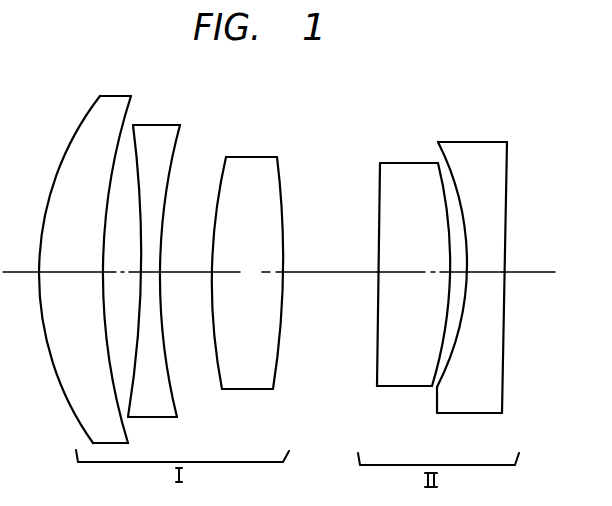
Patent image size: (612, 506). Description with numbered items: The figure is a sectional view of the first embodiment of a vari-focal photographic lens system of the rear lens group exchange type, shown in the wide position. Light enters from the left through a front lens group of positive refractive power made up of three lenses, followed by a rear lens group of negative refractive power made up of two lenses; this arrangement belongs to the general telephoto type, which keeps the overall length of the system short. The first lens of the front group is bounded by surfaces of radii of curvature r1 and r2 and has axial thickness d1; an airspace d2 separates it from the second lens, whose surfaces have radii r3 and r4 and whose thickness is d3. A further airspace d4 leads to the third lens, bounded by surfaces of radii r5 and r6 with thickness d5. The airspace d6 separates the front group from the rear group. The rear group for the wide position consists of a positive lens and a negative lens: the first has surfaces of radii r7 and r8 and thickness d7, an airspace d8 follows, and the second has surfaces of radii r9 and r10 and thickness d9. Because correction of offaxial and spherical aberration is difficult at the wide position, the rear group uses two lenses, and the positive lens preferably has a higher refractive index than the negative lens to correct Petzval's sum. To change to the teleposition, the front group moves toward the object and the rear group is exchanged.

The radius of curvature of first lens surface r1 is at (94, 104).
The radius of curvature of second lens surface r2 is at (133, 102).
The radius of curvature of third lens surface r3 is at (138, 133).
The radius of curvature of fourth lens surface r4 is at (180, 143).
The radius of curvature of fifth lens surface r5 is at (225, 159).
The radius of curvature of sixth lens surface r6 is at (280, 163).
The radius of curvature of seventh lens surface r7 is at (379, 173).
The radius of curvature of eighth lens surface r8 is at (439, 174).
The radius of curvature of ninth lens surface r9 is at (445, 165).
The radius of curvature of tenth lens surface r10 is at (506, 150).
The thickness of first lens d1 is at (65, 273).
The airspace between first and second lenses d2 is at (116, 273).
The thickness of second lens d3 is at (151, 272).
The airspace between second and third lenses d4 is at (178, 273).
The thickness of third lens d5 is at (242, 273).
The airspace between front lens group and rear lens group d6 is at (321, 273).
The thickness of fourth lens d7 is at (402, 273).
The airspace between fourth and fifth lenses d8 is at (456, 271).
The thickness of fifth lens d9 is at (478, 273).